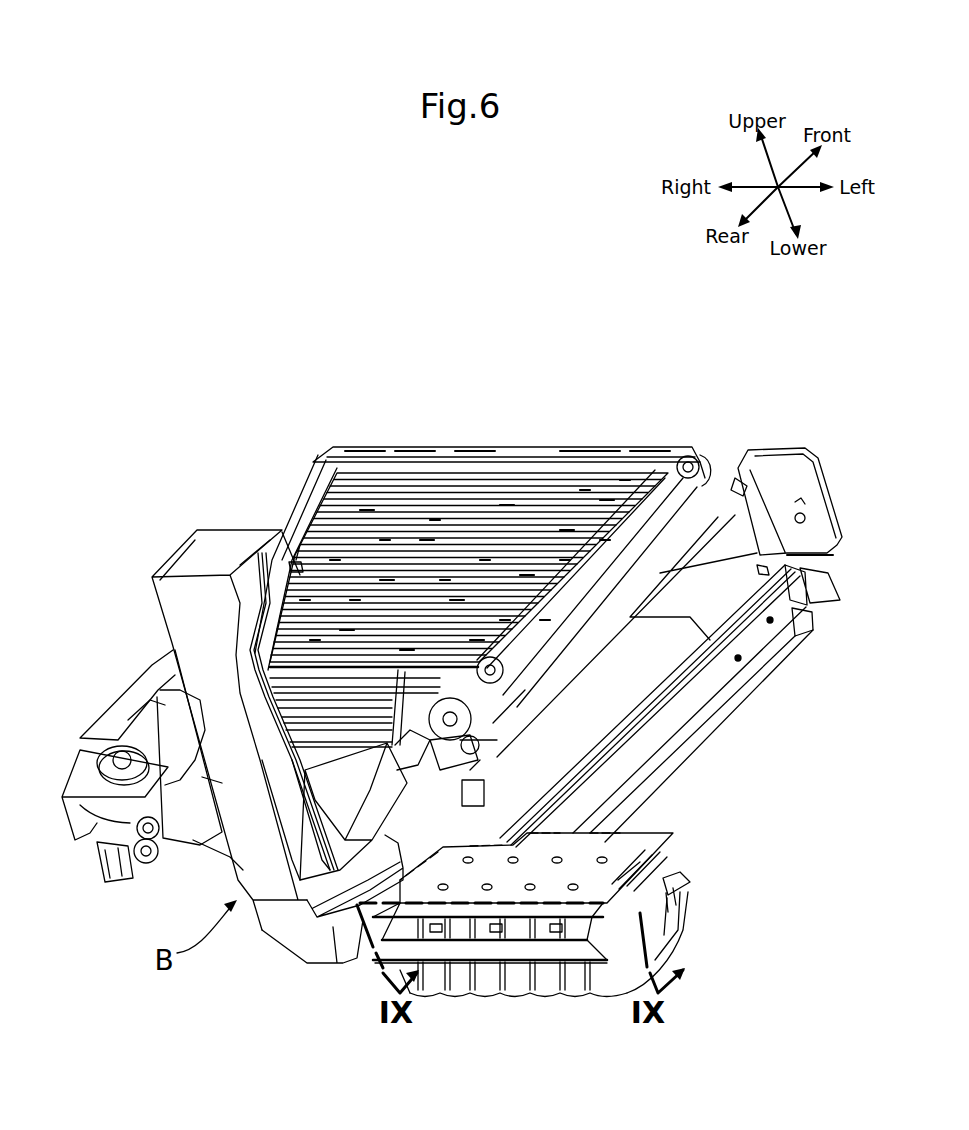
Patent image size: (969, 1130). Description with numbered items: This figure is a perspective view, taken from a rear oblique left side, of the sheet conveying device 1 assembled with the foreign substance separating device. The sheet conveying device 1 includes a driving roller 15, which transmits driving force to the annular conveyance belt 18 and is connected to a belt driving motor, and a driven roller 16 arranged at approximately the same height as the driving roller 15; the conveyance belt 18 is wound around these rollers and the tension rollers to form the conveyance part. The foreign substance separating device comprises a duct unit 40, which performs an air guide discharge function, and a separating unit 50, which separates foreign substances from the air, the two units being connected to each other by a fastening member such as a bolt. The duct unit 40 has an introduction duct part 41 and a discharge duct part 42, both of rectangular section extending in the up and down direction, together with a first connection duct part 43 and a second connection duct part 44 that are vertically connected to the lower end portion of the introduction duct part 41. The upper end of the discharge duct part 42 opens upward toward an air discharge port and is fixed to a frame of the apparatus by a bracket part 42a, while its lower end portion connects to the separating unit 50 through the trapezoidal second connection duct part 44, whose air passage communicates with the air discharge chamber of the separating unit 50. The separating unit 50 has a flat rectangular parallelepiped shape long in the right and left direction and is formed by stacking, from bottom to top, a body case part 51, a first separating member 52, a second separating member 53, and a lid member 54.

The sheet conveying device 1 is at (516, 438).
The driving roller 15 is at (662, 502).
The driven roller 16 is at (366, 482).
The conveyance belt 18 is at (478, 490).
The duct unit 40 is at (150, 607).
The introduction duct part 41 is at (360, 775).
The discharge duct part 42 is at (262, 860).
The bracket part 42a is at (298, 572).
The first connection duct part 43 is at (357, 958).
The second connection duct part 44 is at (367, 893).
The separating unit 50 is at (564, 920).
The body case part 51 is at (673, 915).
The first separating member 52 is at (667, 885).
The second separating member 53 is at (657, 865).
The lid member 54 is at (643, 847).